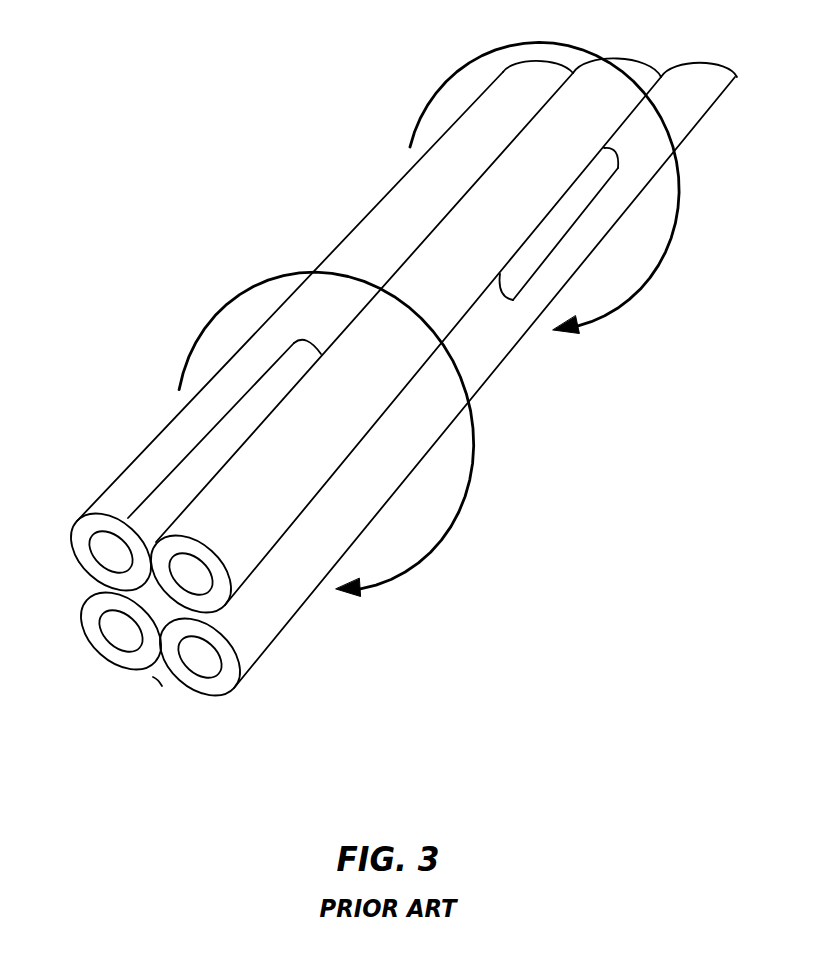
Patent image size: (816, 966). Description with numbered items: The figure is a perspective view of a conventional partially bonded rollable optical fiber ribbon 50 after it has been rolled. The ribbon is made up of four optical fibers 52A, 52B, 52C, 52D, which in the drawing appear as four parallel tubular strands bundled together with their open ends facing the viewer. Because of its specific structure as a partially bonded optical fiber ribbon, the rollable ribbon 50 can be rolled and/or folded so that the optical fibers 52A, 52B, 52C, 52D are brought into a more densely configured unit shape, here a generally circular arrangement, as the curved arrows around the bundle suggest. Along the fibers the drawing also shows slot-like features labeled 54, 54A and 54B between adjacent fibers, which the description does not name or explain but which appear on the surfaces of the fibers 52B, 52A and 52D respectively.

The rollable ribbon 50 is at (255, 160).
The optical fiber 52A is at (113, 552).
The optical fiber 52B is at (448, 303).
The optical fiber 52C is at (203, 663).
The optical fiber 52D is at (118, 632).
The slot 54 is at (563, 218).
The slot of first tube 54A is at (170, 490).
The slot of fourth tube 54B is at (160, 682).